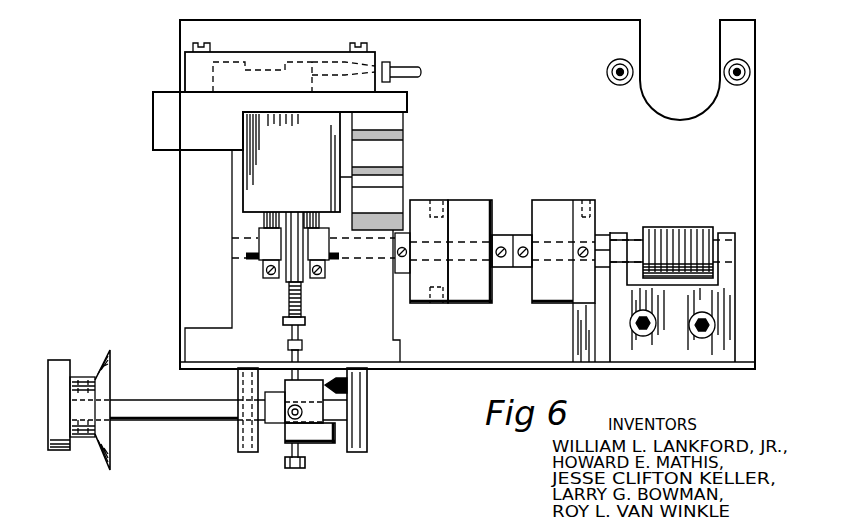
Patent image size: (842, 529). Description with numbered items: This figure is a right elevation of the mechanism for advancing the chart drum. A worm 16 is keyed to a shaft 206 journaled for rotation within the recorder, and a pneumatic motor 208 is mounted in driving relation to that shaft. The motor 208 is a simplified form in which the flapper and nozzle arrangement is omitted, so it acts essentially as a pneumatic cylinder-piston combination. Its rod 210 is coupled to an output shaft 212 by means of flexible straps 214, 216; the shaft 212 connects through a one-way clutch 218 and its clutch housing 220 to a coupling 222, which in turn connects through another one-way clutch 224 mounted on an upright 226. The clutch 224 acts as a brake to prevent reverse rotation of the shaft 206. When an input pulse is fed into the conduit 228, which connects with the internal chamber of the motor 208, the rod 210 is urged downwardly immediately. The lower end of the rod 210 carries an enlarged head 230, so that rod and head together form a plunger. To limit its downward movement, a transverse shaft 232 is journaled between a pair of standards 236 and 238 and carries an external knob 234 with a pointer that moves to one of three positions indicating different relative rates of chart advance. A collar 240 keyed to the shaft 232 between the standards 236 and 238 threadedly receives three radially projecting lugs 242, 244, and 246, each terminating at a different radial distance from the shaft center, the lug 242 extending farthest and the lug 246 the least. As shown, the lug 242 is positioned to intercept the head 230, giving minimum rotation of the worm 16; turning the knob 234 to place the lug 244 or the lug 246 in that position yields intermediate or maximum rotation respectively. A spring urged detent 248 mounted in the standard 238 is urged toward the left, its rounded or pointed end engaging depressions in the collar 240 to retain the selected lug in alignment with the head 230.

The worm 16 is at (690, 237).
The shaft 206 is at (603, 246).
The pneumatic motor 208 is at (301, 153).
The rod 210 is at (295, 271).
The output shaft 212 is at (338, 252).
The flexible strap 214 is at (268, 280).
The flexible strap 216 is at (314, 281).
The one-way clutch 218 is at (471, 206).
The clutch housing 220 is at (419, 206).
The coupling 222 is at (508, 271).
The one-way clutch 224 is at (553, 210).
The upright 226 is at (587, 340).
The conduit 228 is at (400, 70).
The enlarged head 230 is at (305, 322).
The transverse shaft 232 is at (181, 418).
The knob 234 is at (66, 450).
The standard 236 is at (248, 453).
The standard 238 is at (368, 446).
The collar 240 is at (318, 445).
The lug 242 is at (293, 343).
The lug 244 is at (315, 407).
The lug 246 is at (281, 468).
The spring urged detent 248 is at (342, 386).